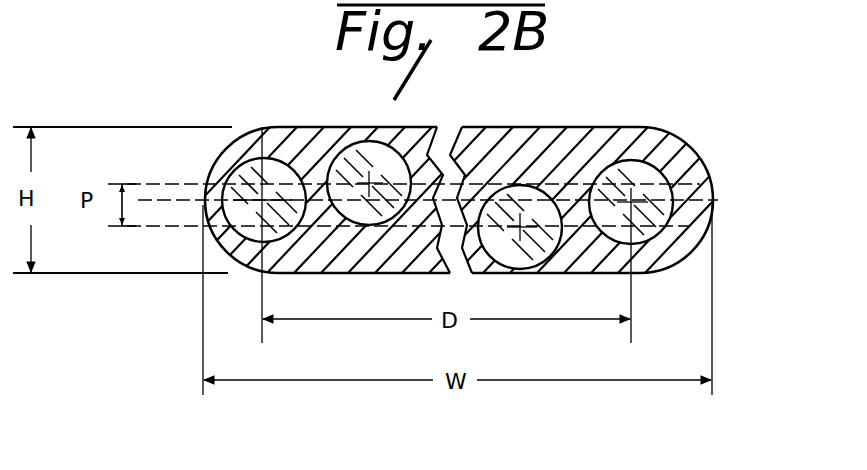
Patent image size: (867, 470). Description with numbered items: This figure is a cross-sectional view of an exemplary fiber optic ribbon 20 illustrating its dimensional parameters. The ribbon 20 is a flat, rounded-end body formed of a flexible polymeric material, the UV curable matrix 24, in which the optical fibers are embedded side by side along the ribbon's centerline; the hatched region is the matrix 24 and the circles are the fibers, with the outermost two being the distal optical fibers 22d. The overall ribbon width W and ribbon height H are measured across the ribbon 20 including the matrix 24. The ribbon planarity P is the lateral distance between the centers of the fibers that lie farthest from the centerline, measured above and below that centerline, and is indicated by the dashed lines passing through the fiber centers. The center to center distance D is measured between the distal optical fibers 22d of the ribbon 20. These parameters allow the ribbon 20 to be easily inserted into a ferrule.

The fiber optic ribbon 20 is at (641, 119).
The distal optical fibers 22d is at (263, 127).
The UV curable matrix 24 is at (682, 143).